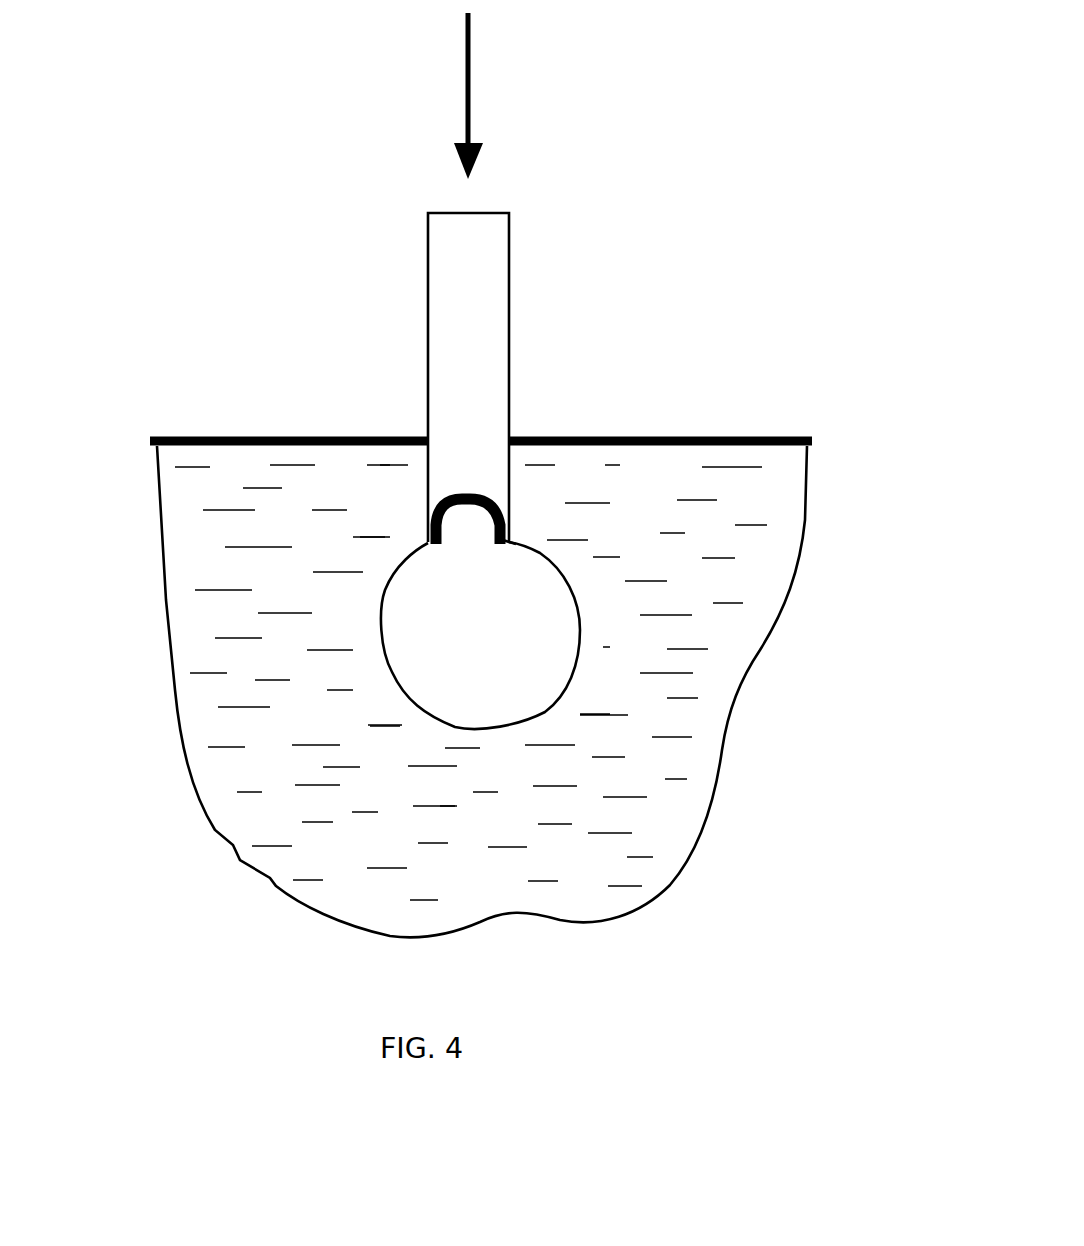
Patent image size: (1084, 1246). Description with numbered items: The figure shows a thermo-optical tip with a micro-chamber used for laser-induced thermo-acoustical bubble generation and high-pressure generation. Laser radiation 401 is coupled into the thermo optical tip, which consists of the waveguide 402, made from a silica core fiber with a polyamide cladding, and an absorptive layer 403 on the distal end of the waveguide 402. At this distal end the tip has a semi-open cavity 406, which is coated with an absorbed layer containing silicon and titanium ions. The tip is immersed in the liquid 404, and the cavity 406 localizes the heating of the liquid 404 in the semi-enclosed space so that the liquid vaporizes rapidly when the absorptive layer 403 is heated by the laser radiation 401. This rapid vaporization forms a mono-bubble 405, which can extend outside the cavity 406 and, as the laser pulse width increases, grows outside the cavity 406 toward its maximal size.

The laser radiation 401 is at (474, 72).
The waveguide 402 is at (513, 292).
The absorptive layer 403 is at (514, 538).
The liquid 404 is at (774, 496).
The mono-bubble 405 is at (500, 643).
The semi-open cavity 406 is at (466, 528).